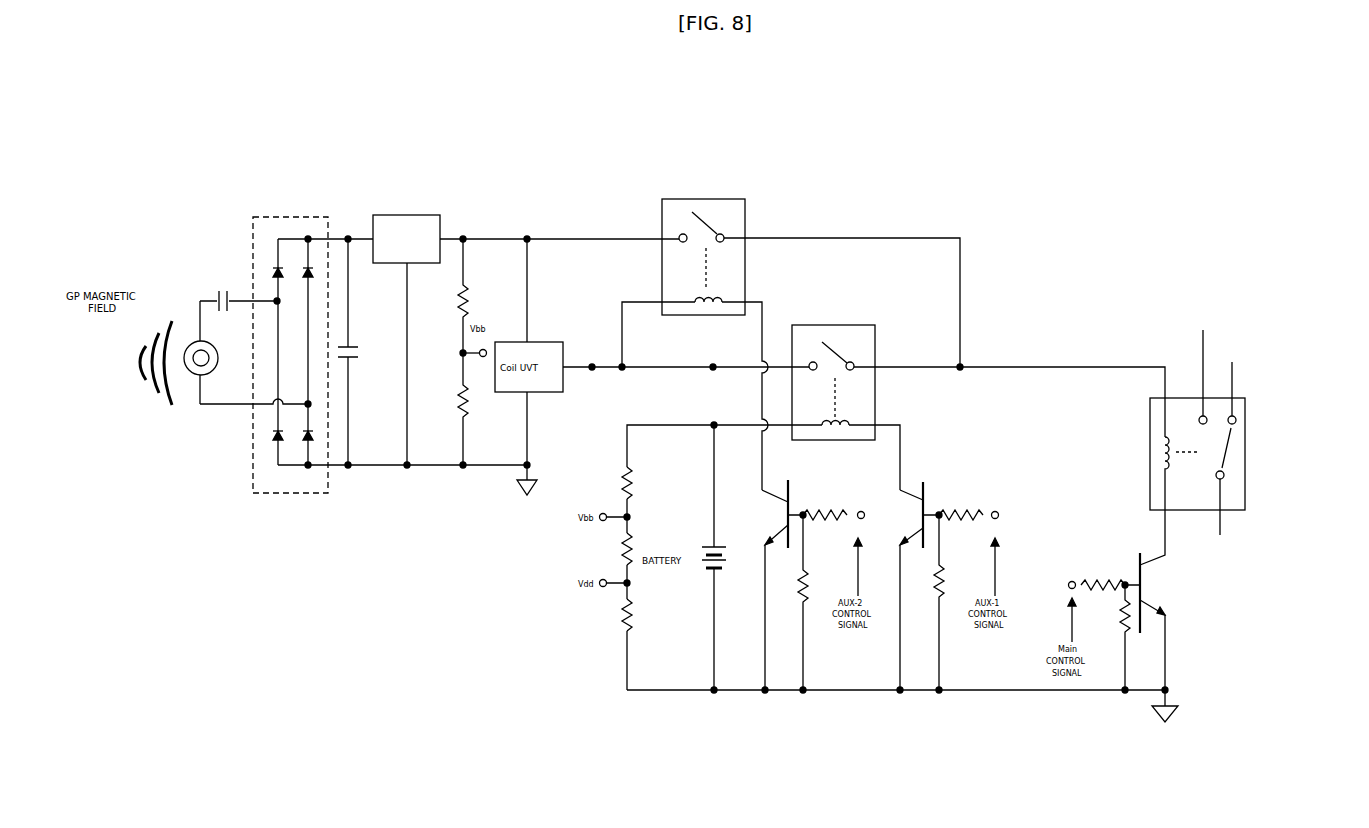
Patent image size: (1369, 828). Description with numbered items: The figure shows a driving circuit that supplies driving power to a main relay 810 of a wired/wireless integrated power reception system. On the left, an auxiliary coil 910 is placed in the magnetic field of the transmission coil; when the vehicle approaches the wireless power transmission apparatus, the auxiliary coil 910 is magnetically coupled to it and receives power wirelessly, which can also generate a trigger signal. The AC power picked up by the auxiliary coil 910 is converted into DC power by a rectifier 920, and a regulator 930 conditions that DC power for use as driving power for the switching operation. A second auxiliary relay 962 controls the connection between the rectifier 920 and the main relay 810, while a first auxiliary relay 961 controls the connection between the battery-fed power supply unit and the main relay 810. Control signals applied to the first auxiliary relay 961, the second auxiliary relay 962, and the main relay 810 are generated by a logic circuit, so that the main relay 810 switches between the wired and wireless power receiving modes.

The auxiliary coil 910 is at (193, 300).
The rectifier 920 is at (287, 213).
The regulator 930 is at (405, 214).
The second auxiliary relay 962 is at (698, 198).
The first auxiliary relay 961 is at (800, 325).
The main relay 810 is at (1148, 418).